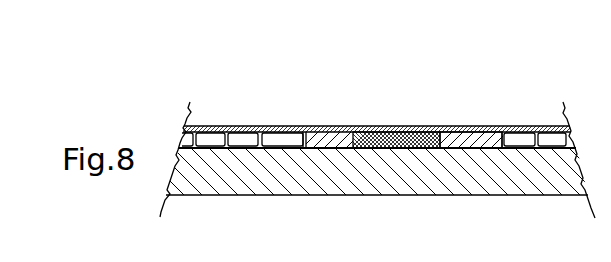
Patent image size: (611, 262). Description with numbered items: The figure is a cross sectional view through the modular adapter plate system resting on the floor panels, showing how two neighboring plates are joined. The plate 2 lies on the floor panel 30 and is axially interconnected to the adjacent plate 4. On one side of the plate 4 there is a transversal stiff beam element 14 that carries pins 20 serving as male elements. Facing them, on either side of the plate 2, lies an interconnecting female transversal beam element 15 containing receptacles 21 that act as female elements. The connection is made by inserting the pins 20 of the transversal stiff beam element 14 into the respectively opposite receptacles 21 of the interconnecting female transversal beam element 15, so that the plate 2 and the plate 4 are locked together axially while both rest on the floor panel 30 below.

The plate 2 is at (365, 139).
The plate 4 is at (374, 99).
The transversal stiff beam element 14 is at (325, 122).
The pins 20 is at (378, 122).
The interconnecting female transversal beam element 15 is at (462, 99).
The receptacles 21 is at (473, 120).
The floor panel 30 is at (273, 195).